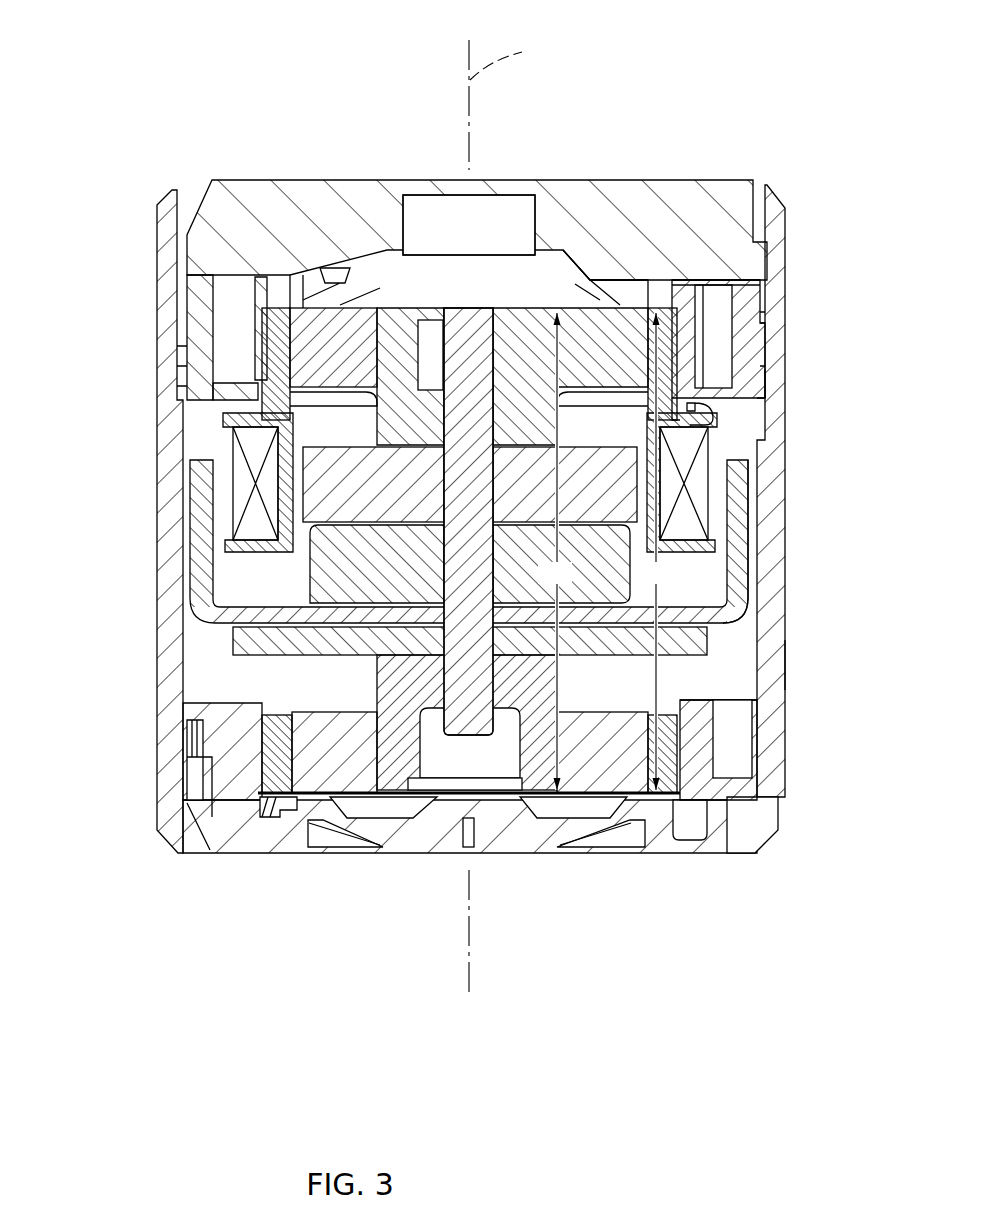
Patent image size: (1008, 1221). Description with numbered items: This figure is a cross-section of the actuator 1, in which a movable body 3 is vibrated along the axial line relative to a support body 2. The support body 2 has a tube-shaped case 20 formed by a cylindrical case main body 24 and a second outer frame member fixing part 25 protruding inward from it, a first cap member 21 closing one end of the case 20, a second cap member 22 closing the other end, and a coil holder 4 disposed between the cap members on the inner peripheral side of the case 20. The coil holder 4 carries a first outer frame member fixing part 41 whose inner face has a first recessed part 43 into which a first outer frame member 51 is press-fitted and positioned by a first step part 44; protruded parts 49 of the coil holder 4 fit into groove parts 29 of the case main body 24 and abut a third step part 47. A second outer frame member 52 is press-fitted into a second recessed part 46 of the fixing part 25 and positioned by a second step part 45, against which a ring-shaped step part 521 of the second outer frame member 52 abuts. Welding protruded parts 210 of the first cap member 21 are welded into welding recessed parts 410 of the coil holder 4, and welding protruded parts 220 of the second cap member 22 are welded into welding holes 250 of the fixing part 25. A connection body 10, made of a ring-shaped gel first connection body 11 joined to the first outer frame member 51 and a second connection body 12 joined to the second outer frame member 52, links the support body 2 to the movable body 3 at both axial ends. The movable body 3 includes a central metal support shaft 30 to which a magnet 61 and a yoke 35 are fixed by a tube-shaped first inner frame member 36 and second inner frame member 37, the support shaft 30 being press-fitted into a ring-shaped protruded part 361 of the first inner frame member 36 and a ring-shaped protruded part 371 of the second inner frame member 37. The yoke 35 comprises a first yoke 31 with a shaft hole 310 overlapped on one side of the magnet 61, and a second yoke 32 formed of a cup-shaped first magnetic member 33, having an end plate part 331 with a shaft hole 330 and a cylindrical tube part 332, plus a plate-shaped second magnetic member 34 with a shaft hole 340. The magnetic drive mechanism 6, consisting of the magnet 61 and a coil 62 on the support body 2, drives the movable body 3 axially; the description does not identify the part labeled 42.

The actuator 1 is at (122, 79).
The support body 2 is at (800, 287).
The movable body 3 is at (726, 632).
The coil holder 4 is at (756, 286).
The magnetic drive mechanism 6 is at (110, 540).
The connection body 10 is at (585, 516).
The first connection body 11 is at (588, 330).
The second connection body 12 is at (608, 778).
The case 20 is at (796, 489).
The first cap member 21 is at (684, 178).
The second cap member 22 is at (565, 866).
The case main body 24 is at (785, 662).
The second outer frame member fixing part 25 is at (695, 700).
The groove parts 29 is at (778, 367).
The support shaft 30 is at (462, 360).
The first yoke 31 is at (318, 498).
The second yoke 32 is at (96, 603).
The first magnetic member 33 is at (205, 593).
The second magnetic member 34 is at (240, 642).
The yoke 35 is at (72, 515).
The first inner frame member 36 is at (541, 325).
The second inner frame member 37 is at (530, 795).
The first outer frame member fixing part 41 is at (717, 280).
The bearing holder recess 42 is at (715, 420).
The first recessed part 43 is at (778, 340).
The first step part 44 is at (776, 380).
The second step part 45 is at (710, 735).
The second recessed part 46 is at (700, 780).
The third step part 47 is at (778, 395).
The protruded parts 49 is at (778, 326).
The first outer frame member 51 is at (660, 325).
The second outer frame member 52 is at (655, 795).
The magnet 61 is at (322, 563).
The coil 62 is at (253, 530).
The welding protruded parts 210 is at (195, 338).
The welding protruded parts 220 is at (217, 777).
The welding holes 250 is at (213, 759).
The shaft hole 310 is at (450, 470).
The shaft hole 330 is at (488, 620).
The end plate part 331 is at (700, 600).
The cylindrical tube part 332 is at (742, 553).
The shaft hole 340 is at (462, 640).
The ring-shaped protruded part 361 is at (512, 380).
The ring-shaped protruded part 371 is at (510, 708).
The welding recessed parts 410 is at (215, 397).
The ring-shaped step part 521 is at (732, 739).